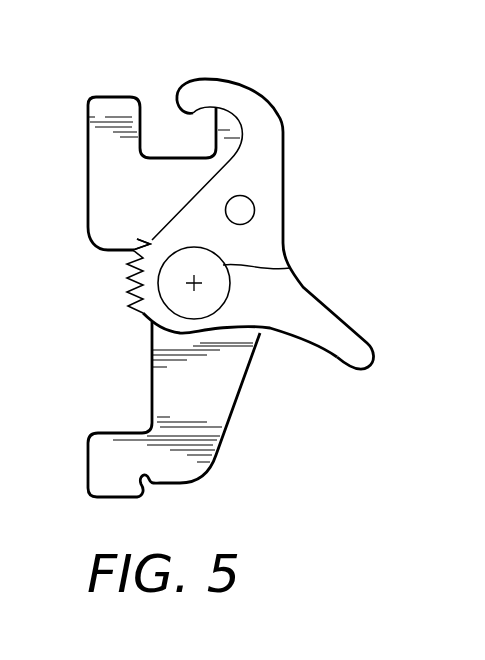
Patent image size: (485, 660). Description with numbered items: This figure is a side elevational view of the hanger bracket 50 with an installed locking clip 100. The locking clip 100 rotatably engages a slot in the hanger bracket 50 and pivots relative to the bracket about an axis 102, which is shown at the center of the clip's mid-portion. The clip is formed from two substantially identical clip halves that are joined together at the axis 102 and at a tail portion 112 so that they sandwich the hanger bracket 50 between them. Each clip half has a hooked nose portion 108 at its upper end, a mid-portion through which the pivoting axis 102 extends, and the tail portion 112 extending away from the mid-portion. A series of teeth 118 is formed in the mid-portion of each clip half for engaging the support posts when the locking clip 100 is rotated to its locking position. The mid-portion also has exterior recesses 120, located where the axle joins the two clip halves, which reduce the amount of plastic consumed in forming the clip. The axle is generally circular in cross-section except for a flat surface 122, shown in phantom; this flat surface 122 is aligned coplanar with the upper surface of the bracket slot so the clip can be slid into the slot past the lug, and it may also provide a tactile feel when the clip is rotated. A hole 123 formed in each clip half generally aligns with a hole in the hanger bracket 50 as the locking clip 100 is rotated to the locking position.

The hanger bracket 50 is at (133, 53).
The locking clip 100 is at (283, 128).
The hooked nose portion 108 is at (213, 79).
The tail portion 112 is at (305, 343).
The flat surface 122 is at (290, 268).
The hole 123 is at (254, 210).
The axis 102 is at (187, 289).
The teeth 118 is at (127, 288).
The exterior recesses 120 is at (159, 278).